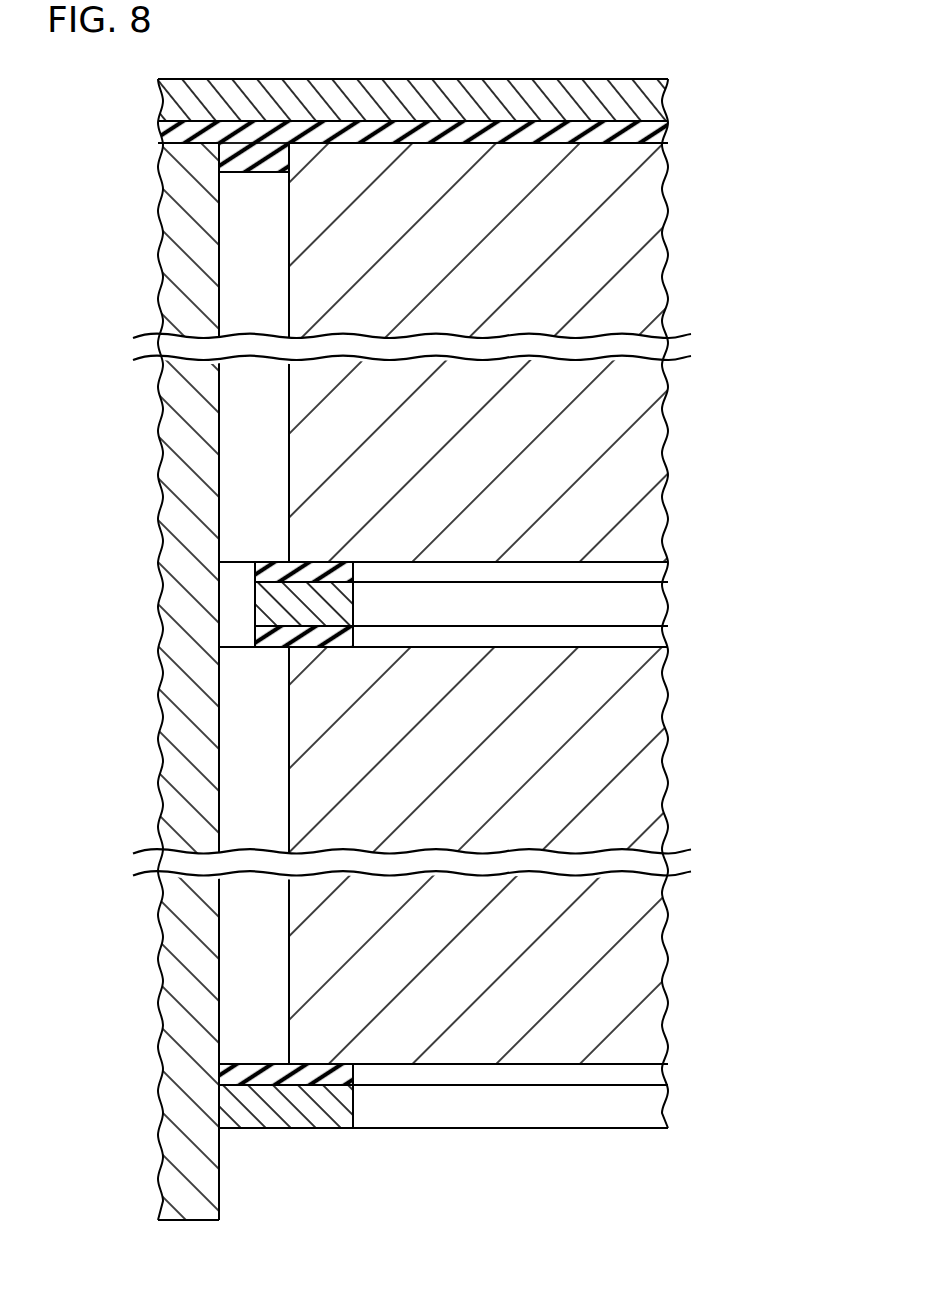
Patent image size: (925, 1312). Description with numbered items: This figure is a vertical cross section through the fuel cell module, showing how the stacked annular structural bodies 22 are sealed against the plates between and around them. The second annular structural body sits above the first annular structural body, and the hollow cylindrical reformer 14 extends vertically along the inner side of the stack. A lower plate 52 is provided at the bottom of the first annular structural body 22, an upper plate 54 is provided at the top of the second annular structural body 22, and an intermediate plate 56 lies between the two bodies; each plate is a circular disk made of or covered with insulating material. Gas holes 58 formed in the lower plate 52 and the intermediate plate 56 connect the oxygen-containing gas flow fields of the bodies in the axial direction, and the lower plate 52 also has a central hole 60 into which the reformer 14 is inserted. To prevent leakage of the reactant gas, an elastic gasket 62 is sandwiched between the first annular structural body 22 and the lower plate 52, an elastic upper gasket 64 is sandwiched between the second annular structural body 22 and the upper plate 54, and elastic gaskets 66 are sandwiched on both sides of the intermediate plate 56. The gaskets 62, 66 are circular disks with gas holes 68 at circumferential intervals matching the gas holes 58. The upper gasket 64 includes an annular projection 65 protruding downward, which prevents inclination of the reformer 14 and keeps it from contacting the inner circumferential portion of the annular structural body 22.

The reformer 14 is at (146, 199).
The annular structural body 22 is at (690, 262).
The lower plate 52 is at (683, 1098).
The upper plate 54 is at (347, 67).
The intermediate plate 56 is at (683, 594).
The gas hole 58 is at (648, 602).
The central hole 60 is at (255, 599).
The gasket 62 is at (254, 1073).
The upper gasket 64 is at (607, 132).
The annular projection 65 is at (258, 165).
The gasket 66 is at (272, 568).
The gas hole 68 is at (622, 572).